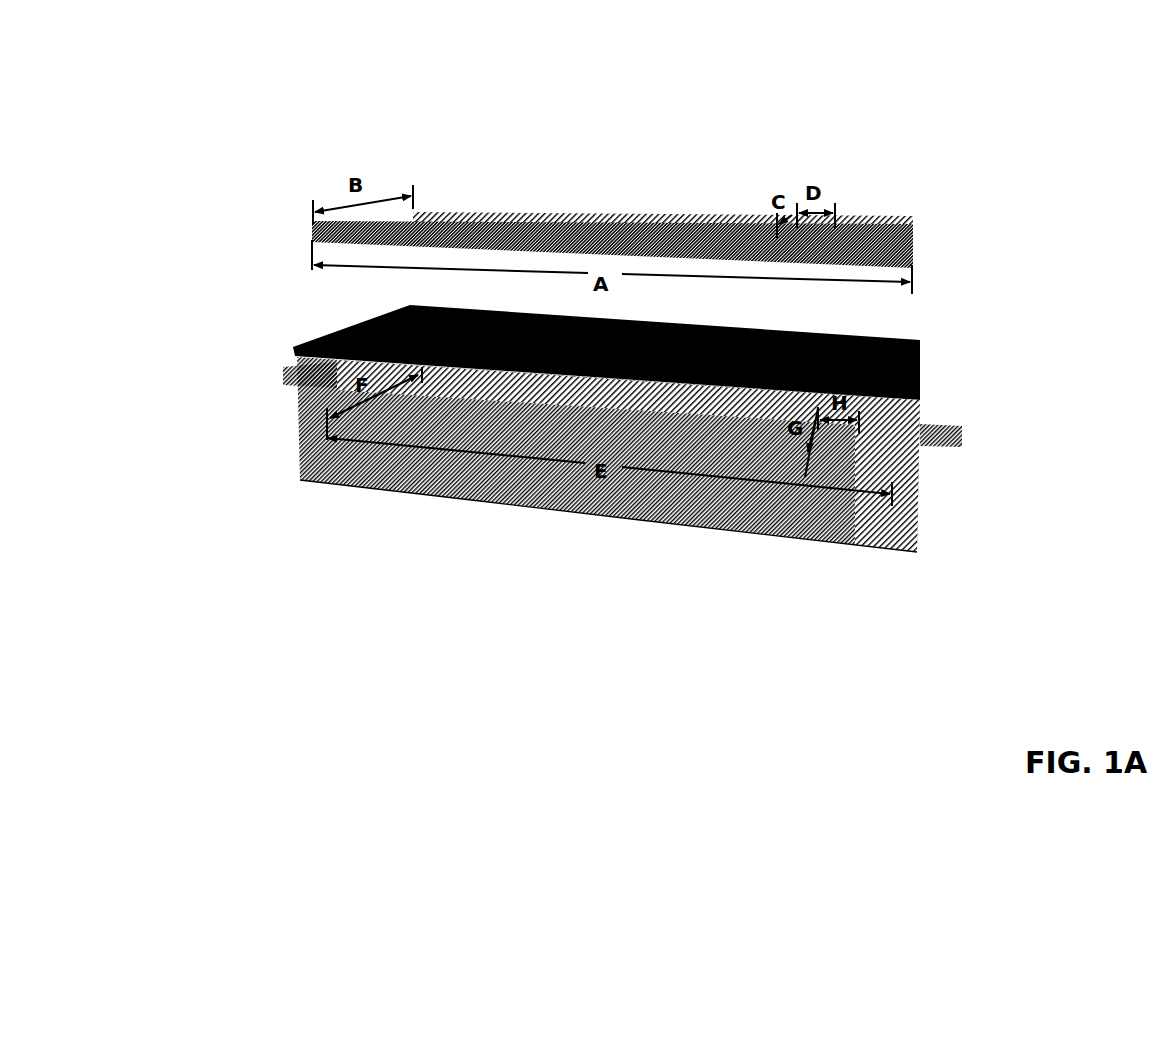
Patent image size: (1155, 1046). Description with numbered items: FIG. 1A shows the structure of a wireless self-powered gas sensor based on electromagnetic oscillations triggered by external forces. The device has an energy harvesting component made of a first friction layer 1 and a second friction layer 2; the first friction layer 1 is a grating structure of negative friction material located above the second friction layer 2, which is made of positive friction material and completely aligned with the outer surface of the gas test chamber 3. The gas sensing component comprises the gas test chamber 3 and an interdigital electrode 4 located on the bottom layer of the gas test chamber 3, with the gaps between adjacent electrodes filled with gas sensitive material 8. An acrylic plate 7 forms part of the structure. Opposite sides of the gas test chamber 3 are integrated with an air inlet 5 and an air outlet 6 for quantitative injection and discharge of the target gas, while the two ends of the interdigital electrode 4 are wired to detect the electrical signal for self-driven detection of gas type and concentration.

The first friction layer 1 is at (522, 225).
The second friction layer 2 is at (606, 429).
The gas test chamber 3 is at (820, 330).
The interdigital electrode 4 is at (578, 487).
The air inlet 5 is at (290, 372).
The air outlet 6 is at (965, 435).
The acrylic plate 7 is at (430, 475).
The gas sensitive material 8 is at (685, 505).